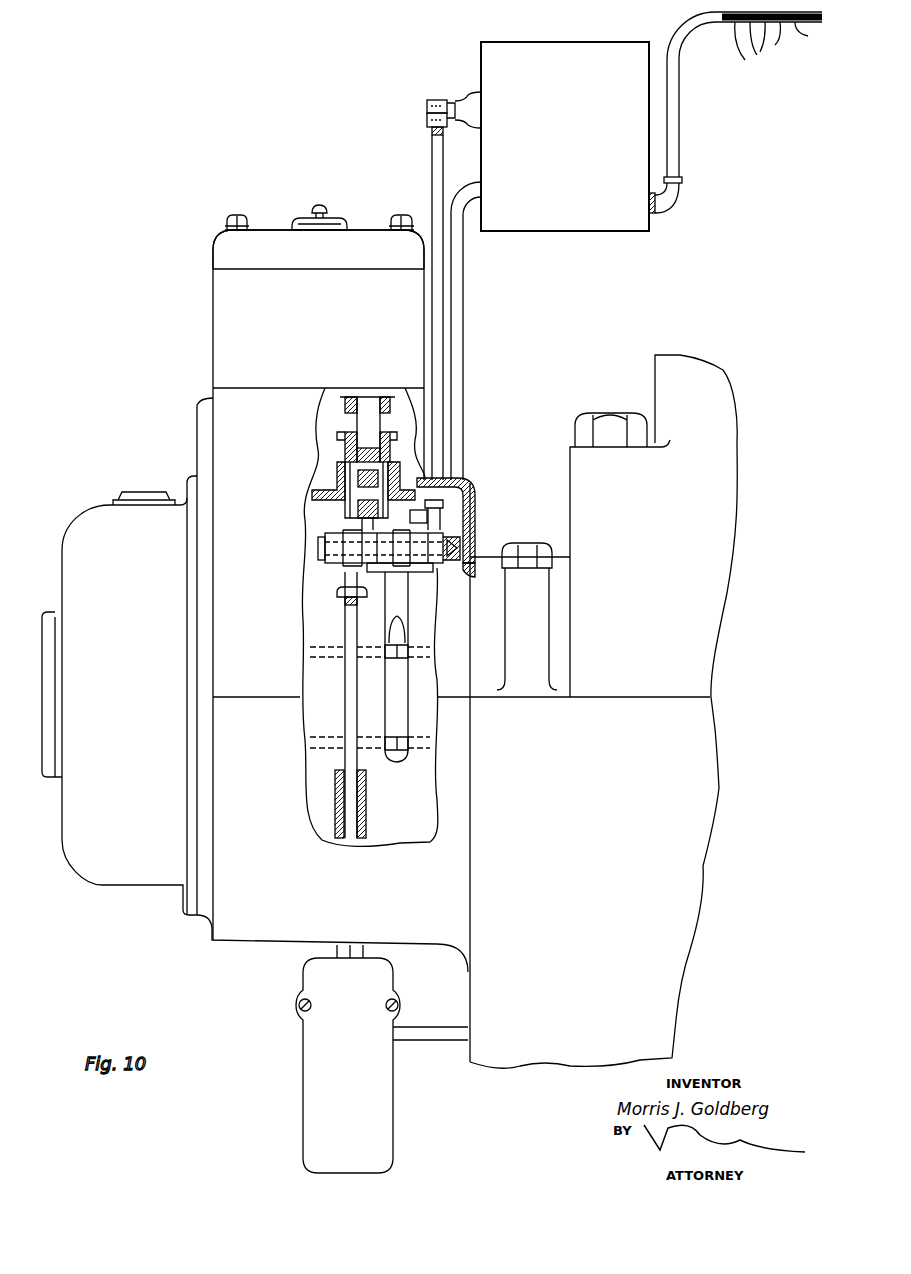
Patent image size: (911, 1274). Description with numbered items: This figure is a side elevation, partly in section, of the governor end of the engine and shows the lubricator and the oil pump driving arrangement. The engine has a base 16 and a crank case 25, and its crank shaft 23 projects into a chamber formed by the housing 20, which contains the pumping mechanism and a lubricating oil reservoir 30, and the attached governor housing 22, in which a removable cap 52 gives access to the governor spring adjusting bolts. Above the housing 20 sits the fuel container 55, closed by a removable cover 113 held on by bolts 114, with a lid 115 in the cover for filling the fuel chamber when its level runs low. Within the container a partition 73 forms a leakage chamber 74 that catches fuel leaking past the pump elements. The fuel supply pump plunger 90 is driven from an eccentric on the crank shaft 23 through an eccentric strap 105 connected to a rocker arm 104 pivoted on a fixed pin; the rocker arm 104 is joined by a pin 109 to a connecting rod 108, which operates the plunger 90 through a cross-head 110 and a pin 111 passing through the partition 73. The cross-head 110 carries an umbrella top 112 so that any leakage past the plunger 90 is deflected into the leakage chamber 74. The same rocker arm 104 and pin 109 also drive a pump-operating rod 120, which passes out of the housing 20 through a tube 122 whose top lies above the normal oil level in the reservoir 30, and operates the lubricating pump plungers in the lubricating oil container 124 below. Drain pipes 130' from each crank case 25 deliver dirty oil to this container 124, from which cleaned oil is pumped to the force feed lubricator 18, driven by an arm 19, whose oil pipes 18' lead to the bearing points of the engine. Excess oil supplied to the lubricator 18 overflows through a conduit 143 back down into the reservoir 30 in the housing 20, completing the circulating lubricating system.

The base 16 is at (594, 882).
The force feed lubricator 18 is at (565, 136).
The oil pipes 18' is at (735, 112).
The arm 19 is at (435, 167).
The housing 20 is at (232, 940).
The housing 22 is at (103, 880).
The crank shaft 23 is at (320, 722).
The crank case 25 is at (617, 526).
The reservoir 30 is at (370, 617).
The removable cap 52 is at (115, 495).
The container 55 is at (213, 305).
The partition 73 is at (335, 490).
The leakage chamber 74 is at (393, 439).
The plunger 90 is at (357, 410).
The rocker arm 104 is at (425, 572).
The eccentric strap 105 is at (400, 638).
The connecting rod 108 is at (405, 528).
The pin 109 is at (318, 548).
The cross-head 110 is at (322, 446).
The pin 111 is at (370, 500).
The umbrella top 112 is at (345, 440).
The removable cover 113 is at (213, 250).
The bolts 114 is at (228, 215).
The lid 115 is at (300, 218).
The pump-operating rod 120 is at (350, 625).
The tube 122 is at (335, 790).
The lubricating oil container 124 is at (310, 1083).
The drain pipes 130' is at (430, 1049).
The conduit 143 is at (463, 300).